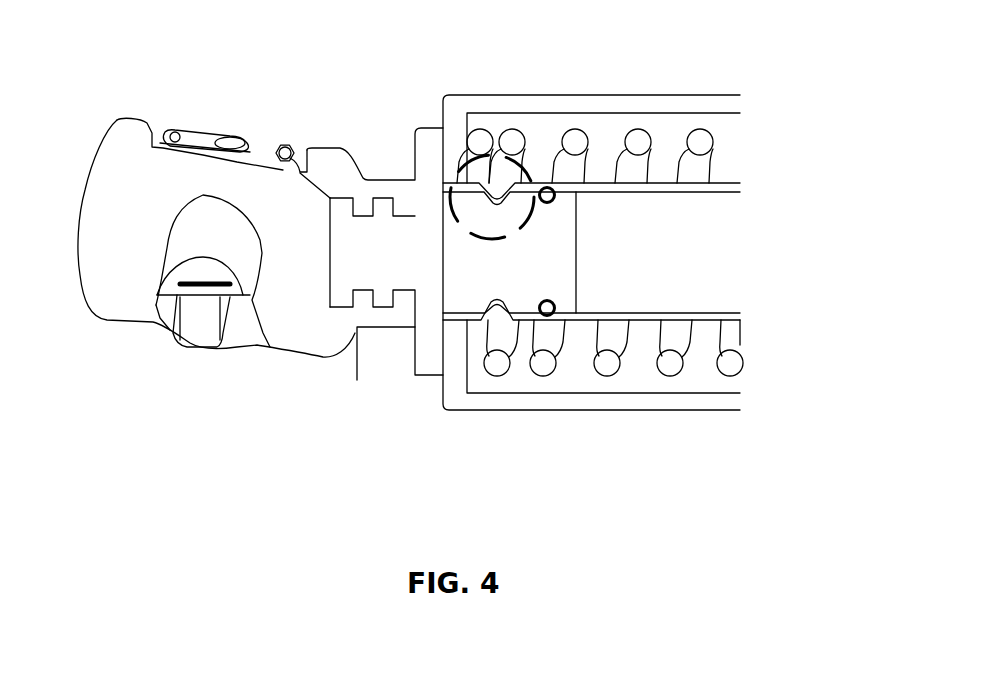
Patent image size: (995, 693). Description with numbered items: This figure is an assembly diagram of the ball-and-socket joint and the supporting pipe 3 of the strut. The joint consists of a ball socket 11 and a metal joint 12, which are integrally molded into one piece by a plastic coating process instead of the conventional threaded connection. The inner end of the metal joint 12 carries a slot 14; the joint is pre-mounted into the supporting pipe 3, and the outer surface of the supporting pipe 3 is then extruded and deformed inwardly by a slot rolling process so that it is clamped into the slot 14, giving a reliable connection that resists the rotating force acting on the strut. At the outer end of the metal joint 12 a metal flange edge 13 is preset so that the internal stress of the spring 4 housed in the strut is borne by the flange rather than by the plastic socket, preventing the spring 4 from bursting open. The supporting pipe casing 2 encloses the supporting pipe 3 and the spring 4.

The supporting pipe casing 2 is at (470, 104).
The supporting pipe 3 is at (648, 320).
The spring 4 is at (730, 377).
The ball socket 11 is at (107, 257).
The metal joint 12 is at (356, 258).
The metal flange edge 13 is at (415, 161).
The slot 14 is at (527, 157).